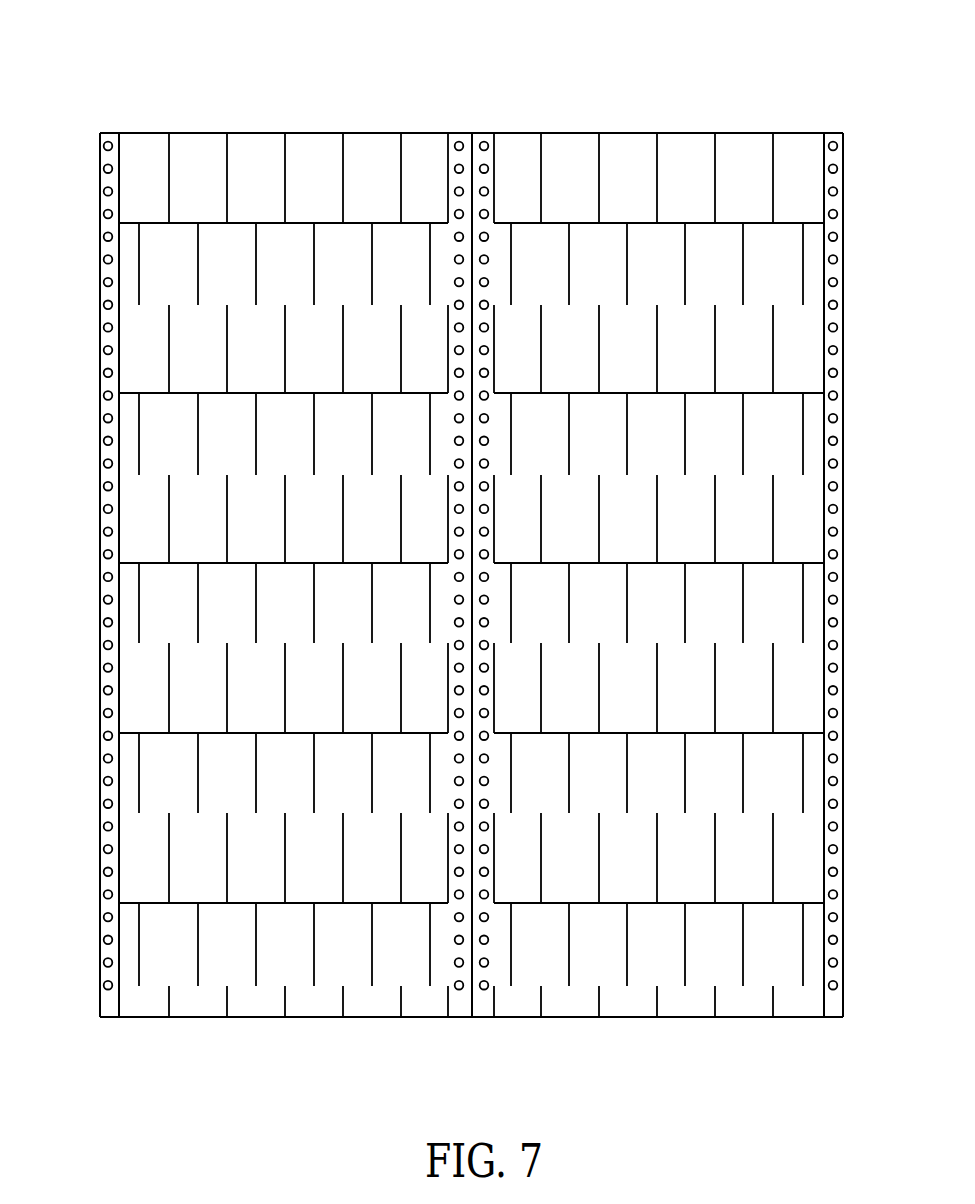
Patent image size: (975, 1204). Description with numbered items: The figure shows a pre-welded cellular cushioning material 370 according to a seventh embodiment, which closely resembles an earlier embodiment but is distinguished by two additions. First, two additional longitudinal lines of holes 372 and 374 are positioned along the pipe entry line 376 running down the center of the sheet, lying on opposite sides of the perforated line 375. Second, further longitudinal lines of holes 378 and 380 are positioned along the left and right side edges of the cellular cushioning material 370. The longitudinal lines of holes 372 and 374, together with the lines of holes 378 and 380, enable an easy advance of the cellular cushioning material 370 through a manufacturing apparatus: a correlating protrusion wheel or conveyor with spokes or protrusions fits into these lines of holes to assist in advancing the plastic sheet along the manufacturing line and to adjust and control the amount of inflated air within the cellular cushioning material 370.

The cellular cushioning material 370 is at (168, 88).
The longitudinal line of holes 372 is at (482, 135).
The longitudinal line of holes 374 is at (452, 160).
The perforated line 375 is at (470, 158).
The pipe entry line 376 is at (472, 1018).
The longitudinal line of holes 378 is at (108, 1018).
The longitudinal line of holes 380 is at (833, 1018).